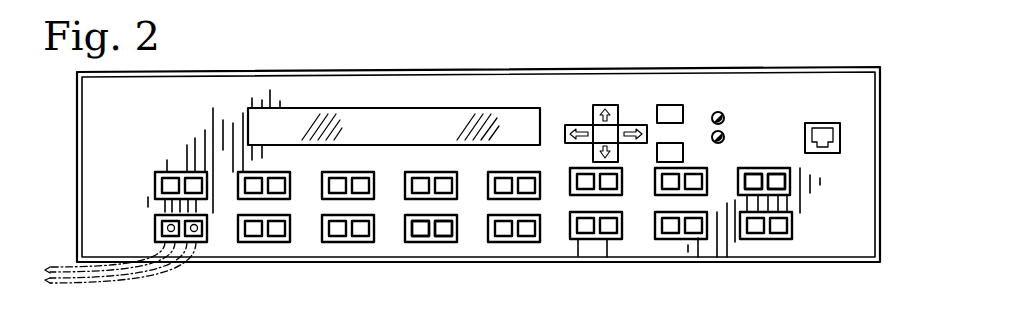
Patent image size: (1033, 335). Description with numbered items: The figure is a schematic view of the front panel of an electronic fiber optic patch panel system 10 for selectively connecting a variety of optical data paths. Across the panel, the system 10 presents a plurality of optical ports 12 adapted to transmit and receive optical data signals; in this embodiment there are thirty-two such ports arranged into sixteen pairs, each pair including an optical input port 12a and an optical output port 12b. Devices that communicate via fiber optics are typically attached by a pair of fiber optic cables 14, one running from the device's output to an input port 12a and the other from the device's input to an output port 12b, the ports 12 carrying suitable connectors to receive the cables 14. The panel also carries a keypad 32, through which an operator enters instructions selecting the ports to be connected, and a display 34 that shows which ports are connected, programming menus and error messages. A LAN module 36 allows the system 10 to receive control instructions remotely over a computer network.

The system 10 is at (804, 41).
The optical ports 12 is at (190, 178).
The optical input port 12a is at (443, 231).
The optical output port 12b is at (420, 231).
The fiber optic cables 14 is at (162, 252).
The keypad 32 is at (632, 82).
The display 34 is at (406, 138).
The LAN module 36 is at (840, 138).